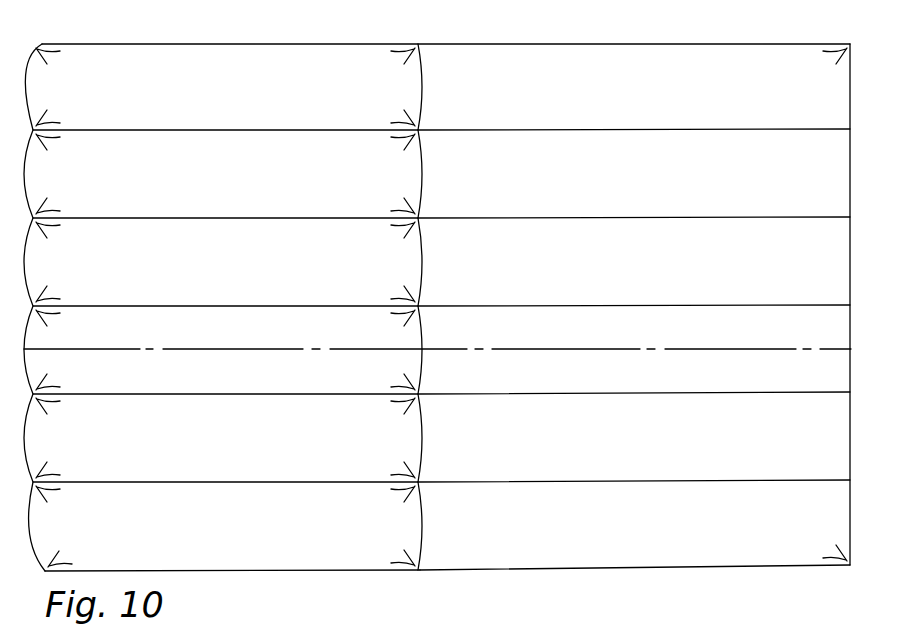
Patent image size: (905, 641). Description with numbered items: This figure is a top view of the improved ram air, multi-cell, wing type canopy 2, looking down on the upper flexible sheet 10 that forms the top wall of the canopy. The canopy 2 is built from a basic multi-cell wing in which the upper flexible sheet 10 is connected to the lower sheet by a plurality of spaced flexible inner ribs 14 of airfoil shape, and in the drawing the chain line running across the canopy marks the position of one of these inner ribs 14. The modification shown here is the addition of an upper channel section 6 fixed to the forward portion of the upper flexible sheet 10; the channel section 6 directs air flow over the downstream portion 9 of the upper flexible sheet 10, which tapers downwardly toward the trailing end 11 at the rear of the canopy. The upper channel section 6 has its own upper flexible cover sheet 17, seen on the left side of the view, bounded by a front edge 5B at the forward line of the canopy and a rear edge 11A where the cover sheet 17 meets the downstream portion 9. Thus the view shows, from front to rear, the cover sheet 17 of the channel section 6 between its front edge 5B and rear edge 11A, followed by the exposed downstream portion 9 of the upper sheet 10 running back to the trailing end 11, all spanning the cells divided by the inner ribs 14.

The ram air, multi-cell, wing type canopy 2 is at (222, 40).
The upper channel section 6 is at (368, 40).
The upper flexible sheet 10 is at (640, 40).
The trailing end 11 is at (849, 78).
The downstream portion 9 is at (570, 101).
The upper flexible cover sheet 17 is at (272, 188).
The front edge 5B is at (28, 172).
The rear edge 11A is at (423, 167).
The inner ribs 14 is at (85, 338).